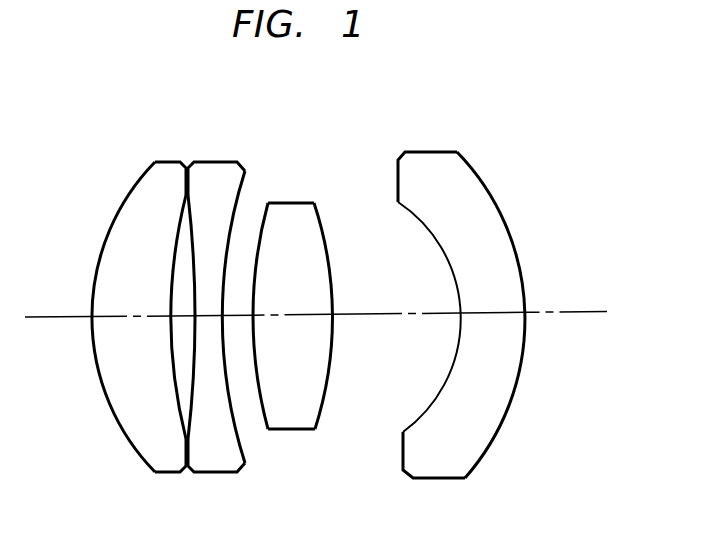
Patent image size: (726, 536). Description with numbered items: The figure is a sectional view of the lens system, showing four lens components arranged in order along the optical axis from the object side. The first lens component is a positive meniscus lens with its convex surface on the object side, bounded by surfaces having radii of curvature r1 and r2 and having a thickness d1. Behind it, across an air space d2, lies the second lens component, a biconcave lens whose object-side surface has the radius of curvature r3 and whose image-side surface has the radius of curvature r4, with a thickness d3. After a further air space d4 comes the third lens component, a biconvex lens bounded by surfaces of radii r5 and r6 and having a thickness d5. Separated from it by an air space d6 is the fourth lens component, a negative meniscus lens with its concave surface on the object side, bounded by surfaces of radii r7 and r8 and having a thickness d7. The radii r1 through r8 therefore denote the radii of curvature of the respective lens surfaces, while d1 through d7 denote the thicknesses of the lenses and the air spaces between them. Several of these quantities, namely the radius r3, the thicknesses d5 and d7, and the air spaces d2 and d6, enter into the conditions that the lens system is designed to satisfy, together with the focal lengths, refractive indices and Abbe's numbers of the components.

The radius of curvature of the object-side surface of the first lens component r1 is at (123, 202).
The radius of curvature of the image-side surface of the first lens component r2 is at (177, 231).
The radius of curvature of the object-side surface of the second lens component r3 is at (192, 227).
The radius of curvature of the image-side surface of the second lens component r4 is at (243, 199).
The radius of curvature of the object-side surface of the third lens component r5 is at (261, 246).
The radius of curvature of the image-side surface of the third lens component r6 is at (325, 242).
The radius of curvature of the object-side surface of the fourth lens component r7 is at (433, 236).
The radius of curvature of the image-side surface of the fourth lens component r8 is at (511, 238).
The thickness of the first lens component d1 is at (125, 316).
The air space between the first lens component and second lens component d2 is at (180, 316).
The thickness of the second lens component d3 is at (206, 316).
The air space between the second lens component and third lens component d4 is at (237, 316).
The thickness of the third lens component d5 is at (289, 314).
The air space between the third lens component and fourth lens component d6 is at (390, 313).
The thickness of the fourth lens component d7 is at (486, 313).